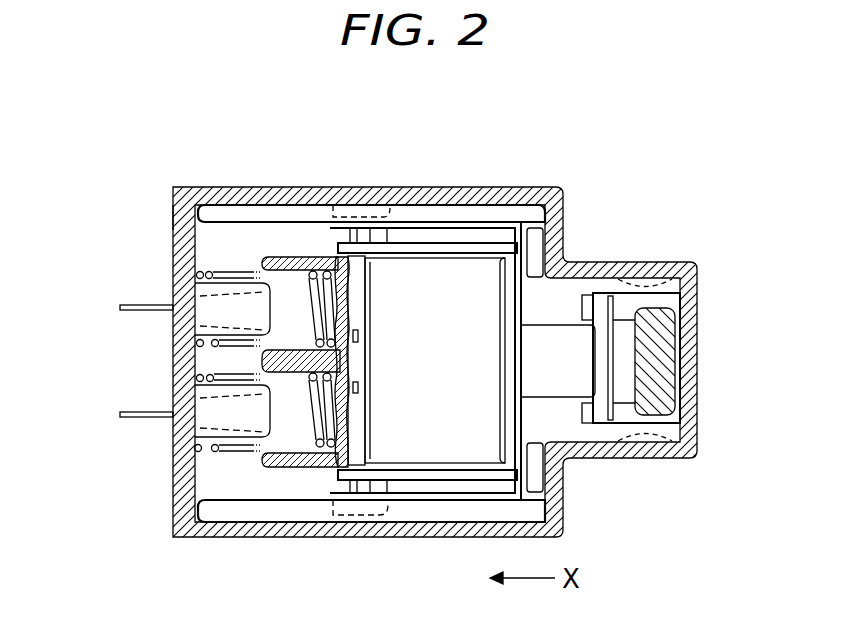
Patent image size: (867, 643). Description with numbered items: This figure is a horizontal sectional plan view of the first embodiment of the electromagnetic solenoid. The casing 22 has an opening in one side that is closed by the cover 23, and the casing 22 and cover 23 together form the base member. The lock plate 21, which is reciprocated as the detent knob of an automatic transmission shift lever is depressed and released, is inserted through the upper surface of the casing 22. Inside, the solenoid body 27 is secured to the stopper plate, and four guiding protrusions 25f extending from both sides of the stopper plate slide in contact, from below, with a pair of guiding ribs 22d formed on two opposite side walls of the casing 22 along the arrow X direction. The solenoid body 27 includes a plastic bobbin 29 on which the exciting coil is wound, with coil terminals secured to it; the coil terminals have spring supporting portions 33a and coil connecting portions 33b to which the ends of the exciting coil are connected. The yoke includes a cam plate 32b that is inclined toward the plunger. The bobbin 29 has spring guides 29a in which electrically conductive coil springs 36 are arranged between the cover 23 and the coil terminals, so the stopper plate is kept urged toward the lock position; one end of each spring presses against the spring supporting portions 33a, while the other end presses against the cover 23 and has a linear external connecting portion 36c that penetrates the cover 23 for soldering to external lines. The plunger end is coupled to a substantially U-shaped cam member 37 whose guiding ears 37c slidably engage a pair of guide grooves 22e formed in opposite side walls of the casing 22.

The lock plate 21 is at (657, 323).
The casing 22 is at (216, 187).
The guiding ribs 22d is at (233, 208).
The guide grooves 22e is at (585, 282).
The cover 23 is at (174, 214).
The guiding protrusions 25f is at (388, 212).
The solenoid body 27 is at (492, 270).
The bobbin 29 is at (340, 468).
The spring guides 29a is at (265, 260).
The cam plate 32b is at (549, 343).
The spring supporting portions 33a is at (352, 256).
The coil connecting portions 33b is at (360, 390).
The coil springs 36 is at (303, 266).
The external connecting portion 36c is at (150, 413).
The cam member 37 is at (630, 377).
The guiding ears 37c is at (662, 287).